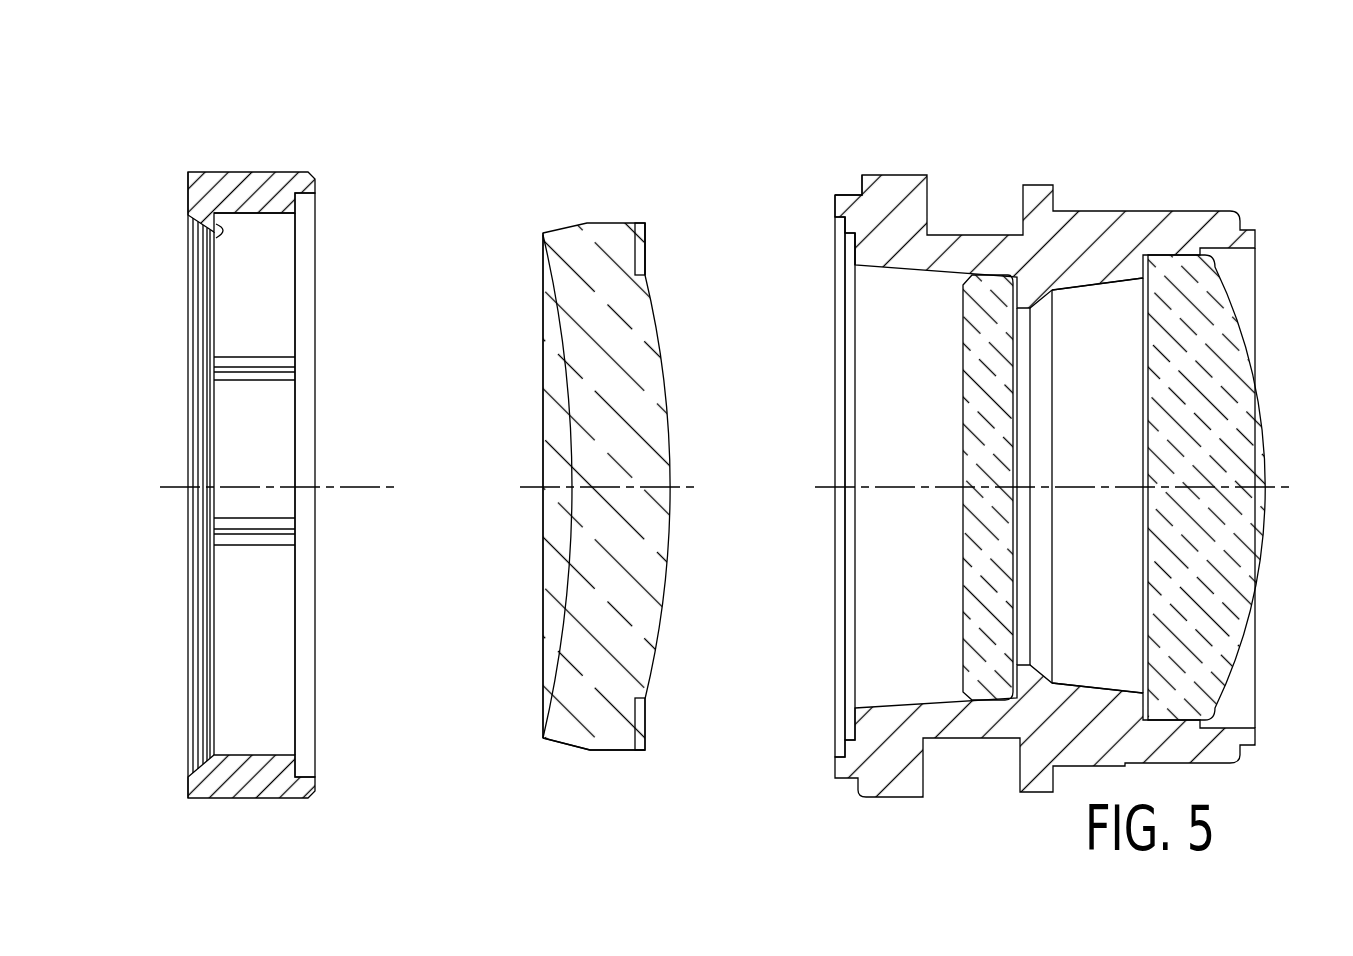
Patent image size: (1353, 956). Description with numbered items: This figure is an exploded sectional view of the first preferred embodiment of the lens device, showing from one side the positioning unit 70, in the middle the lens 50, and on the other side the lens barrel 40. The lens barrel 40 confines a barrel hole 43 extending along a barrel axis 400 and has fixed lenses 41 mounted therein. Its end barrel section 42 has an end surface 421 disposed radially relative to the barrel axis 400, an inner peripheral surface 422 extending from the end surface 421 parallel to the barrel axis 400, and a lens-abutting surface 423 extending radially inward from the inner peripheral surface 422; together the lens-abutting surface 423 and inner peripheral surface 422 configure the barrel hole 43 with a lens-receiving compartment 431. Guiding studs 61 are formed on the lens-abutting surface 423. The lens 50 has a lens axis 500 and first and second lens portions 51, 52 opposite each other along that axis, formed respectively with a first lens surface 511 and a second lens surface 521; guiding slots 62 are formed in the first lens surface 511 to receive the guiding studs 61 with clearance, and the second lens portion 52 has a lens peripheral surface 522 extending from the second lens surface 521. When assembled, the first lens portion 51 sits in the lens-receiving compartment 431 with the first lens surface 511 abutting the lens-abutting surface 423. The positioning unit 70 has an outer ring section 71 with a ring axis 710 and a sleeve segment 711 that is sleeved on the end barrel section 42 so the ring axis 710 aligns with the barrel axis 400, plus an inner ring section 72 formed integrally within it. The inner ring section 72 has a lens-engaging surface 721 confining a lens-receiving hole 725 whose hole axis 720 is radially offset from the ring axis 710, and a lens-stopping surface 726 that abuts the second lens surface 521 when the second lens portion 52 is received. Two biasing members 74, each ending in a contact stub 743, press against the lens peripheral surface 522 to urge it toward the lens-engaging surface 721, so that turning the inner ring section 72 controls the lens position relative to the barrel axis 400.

The positioning unit 70 is at (257, 426).
The outer ring section 71 is at (268, 178).
The sleeve segment 711 is at (302, 201).
The inner ring section 72 is at (235, 228).
The lens-stopping surface 726 is at (222, 230).
The lens-engaging surface 721 is at (257, 212).
The biasing member 74 is at (267, 558).
The contact stub 743 is at (283, 538).
The hole axis 720 is at (253, 483).
The ring axis 710 is at (233, 488).
The lens-receiving hole 725 is at (377, 697).
The lens 50 is at (919, 462).
The second lens surface 521 is at (545, 232).
The lens peripheral surface 522 is at (588, 224).
The first lens surface 511 is at (652, 245).
The guiding slot 62 is at (646, 727).
The second lens portion 52 is at (543, 740).
The first lens portion 51 is at (622, 728).
The lens axis 500 is at (702, 438).
The lens barrel 40 is at (1020, 462).
The fixed lens 41 is at (1220, 318).
The end barrel section 42 is at (842, 194).
The end surface 421 is at (835, 211).
The inner peripheral surface 422 is at (832, 220).
The lens-abutting surface 423 is at (857, 263).
The barrel hole 43 is at (1085, 290).
The lens-receiving compartment 431 is at (845, 250).
The guiding stud 61 is at (835, 743).
The barrel axis 400 is at (1292, 550).